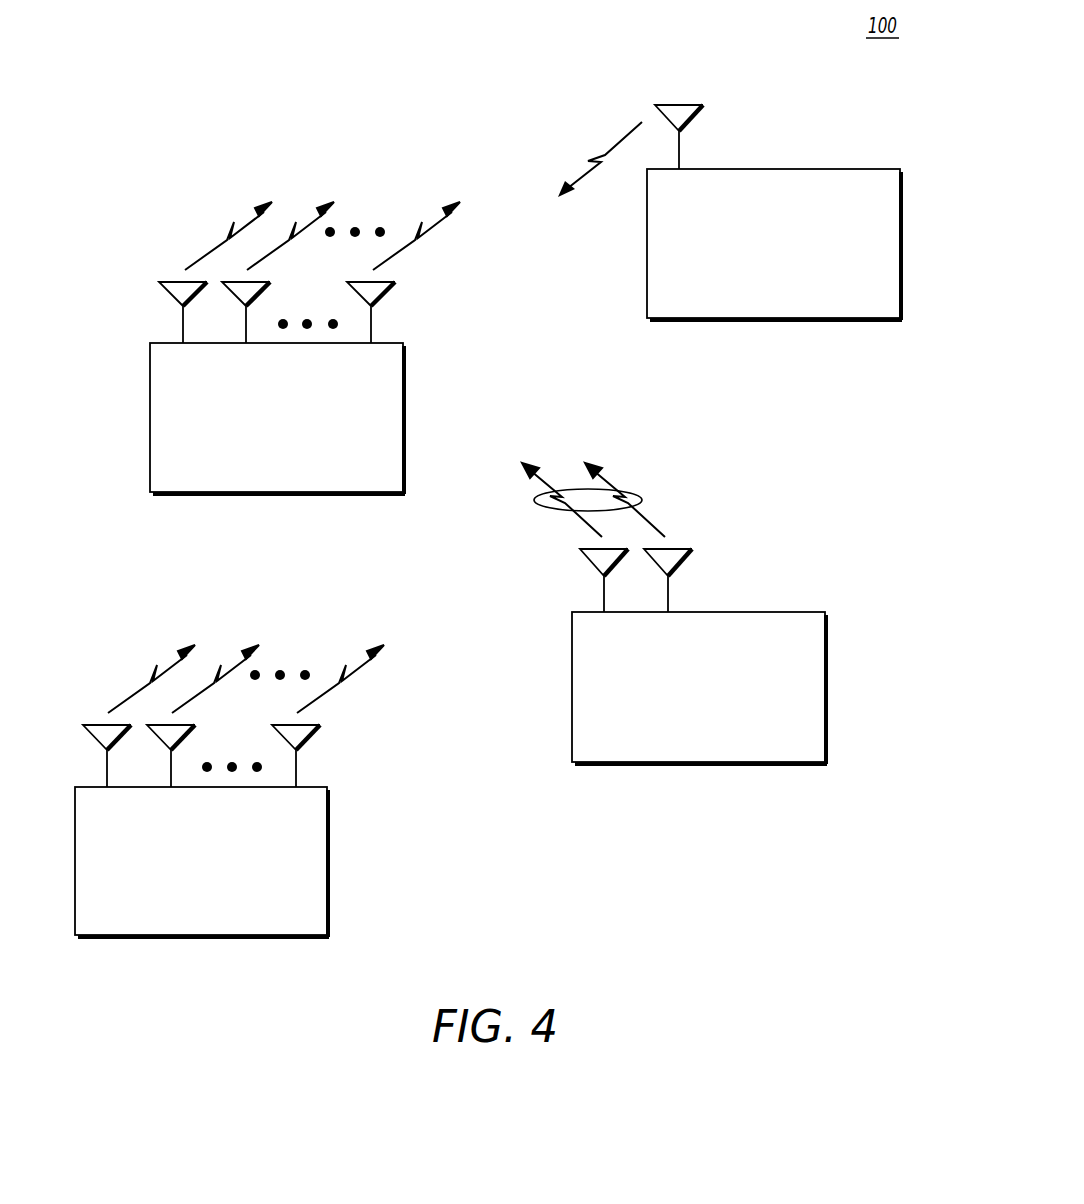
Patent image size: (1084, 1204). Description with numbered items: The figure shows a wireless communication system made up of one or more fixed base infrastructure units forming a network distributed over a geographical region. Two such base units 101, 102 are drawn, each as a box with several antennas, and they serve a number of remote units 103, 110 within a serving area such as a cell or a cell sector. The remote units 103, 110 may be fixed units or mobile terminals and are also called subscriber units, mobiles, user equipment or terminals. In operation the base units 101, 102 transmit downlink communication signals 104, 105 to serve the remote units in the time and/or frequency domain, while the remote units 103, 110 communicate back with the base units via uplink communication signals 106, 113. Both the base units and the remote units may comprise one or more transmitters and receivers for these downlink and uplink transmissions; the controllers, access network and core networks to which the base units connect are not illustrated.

The base unit 101 is at (401, 343).
The base unit 102 is at (325, 787).
The remote unit 103 is at (908, 157).
The downlink communication signals 104 is at (438, 252).
The downlink communication signals 105 is at (363, 697).
The uplink communication signals 106 is at (614, 141).
The remote unit 110 is at (822, 612).
The uplink communication signals 113 is at (643, 496).